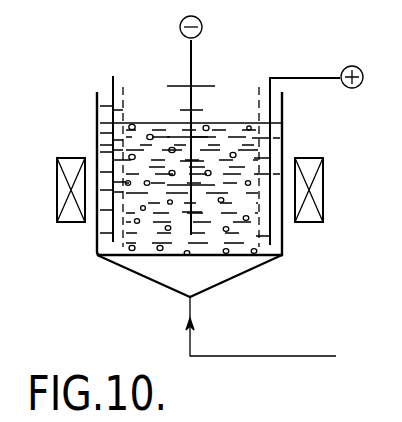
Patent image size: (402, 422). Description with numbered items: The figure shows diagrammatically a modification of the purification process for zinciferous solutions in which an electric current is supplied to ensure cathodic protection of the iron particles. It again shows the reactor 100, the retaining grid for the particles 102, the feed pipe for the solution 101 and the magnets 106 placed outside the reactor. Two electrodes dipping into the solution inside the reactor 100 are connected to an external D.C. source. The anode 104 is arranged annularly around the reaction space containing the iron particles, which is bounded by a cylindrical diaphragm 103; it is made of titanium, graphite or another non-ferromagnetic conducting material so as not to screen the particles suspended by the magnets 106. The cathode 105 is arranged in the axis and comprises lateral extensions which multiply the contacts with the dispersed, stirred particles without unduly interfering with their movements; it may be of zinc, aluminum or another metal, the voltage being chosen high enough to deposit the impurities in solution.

The reactor 100 is at (97, 244).
The feed pipe for the solution 101 is at (190, 346).
The retaining grid for the particles 102 is at (140, 258).
The cylindrical diaphragm 103 is at (120, 112).
The anode 104 is at (270, 112).
The cathode 105 is at (191, 73).
The magnets 106 is at (319, 190).